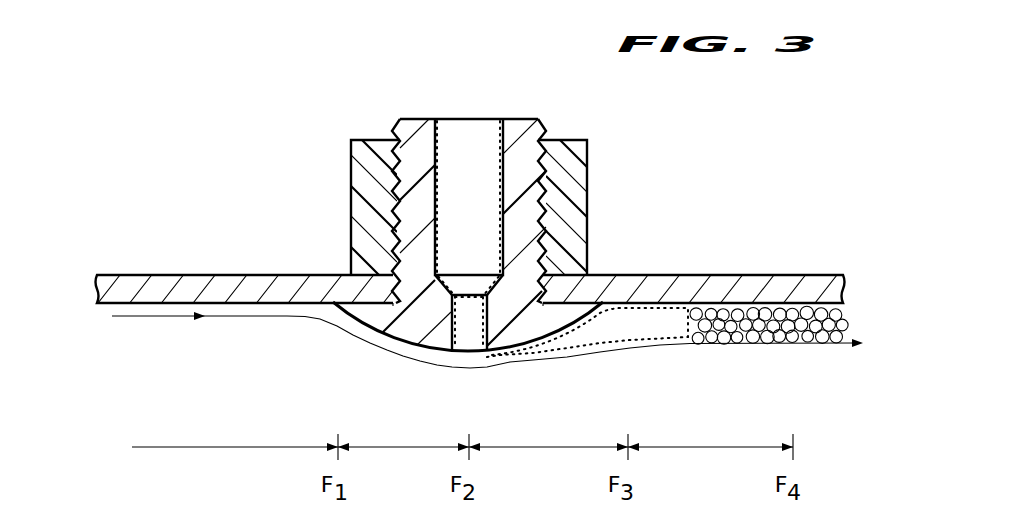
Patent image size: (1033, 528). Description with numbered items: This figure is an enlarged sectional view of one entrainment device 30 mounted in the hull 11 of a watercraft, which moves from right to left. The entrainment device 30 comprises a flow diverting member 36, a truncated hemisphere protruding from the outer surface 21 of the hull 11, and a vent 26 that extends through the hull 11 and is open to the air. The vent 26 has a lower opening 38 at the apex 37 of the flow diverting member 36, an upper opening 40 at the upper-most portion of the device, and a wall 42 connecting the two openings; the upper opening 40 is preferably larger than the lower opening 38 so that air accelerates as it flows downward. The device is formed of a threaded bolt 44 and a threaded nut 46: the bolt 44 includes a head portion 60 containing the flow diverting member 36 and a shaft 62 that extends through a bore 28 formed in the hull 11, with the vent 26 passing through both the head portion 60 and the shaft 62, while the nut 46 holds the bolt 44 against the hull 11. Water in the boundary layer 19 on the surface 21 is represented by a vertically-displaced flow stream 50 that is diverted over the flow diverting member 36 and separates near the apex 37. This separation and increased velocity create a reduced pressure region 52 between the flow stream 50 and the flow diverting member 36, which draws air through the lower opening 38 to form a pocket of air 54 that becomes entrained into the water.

The hull 11 is at (748, 283).
The boundary layer 19 is at (92, 315).
The outer surface 21 is at (282, 314).
The vent 26 is at (472, 140).
The bore 28 is at (540, 264).
The entrainment device 30 is at (339, 90).
The flow diverting member 36 is at (412, 332).
The apex 37 is at (462, 353).
The lower opening 38 is at (478, 356).
The upper opening 40 is at (450, 119).
The wall 42 is at (492, 128).
The threaded bolt 44 is at (422, 137).
The threaded nut 46 is at (352, 178).
The vertically-displaced flow stream 50 is at (157, 318).
The reduced pressure region 52 is at (652, 324).
The pocket of air 54 is at (599, 326).
The head portion 60 is at (330, 367).
The shaft 62 is at (528, 152).